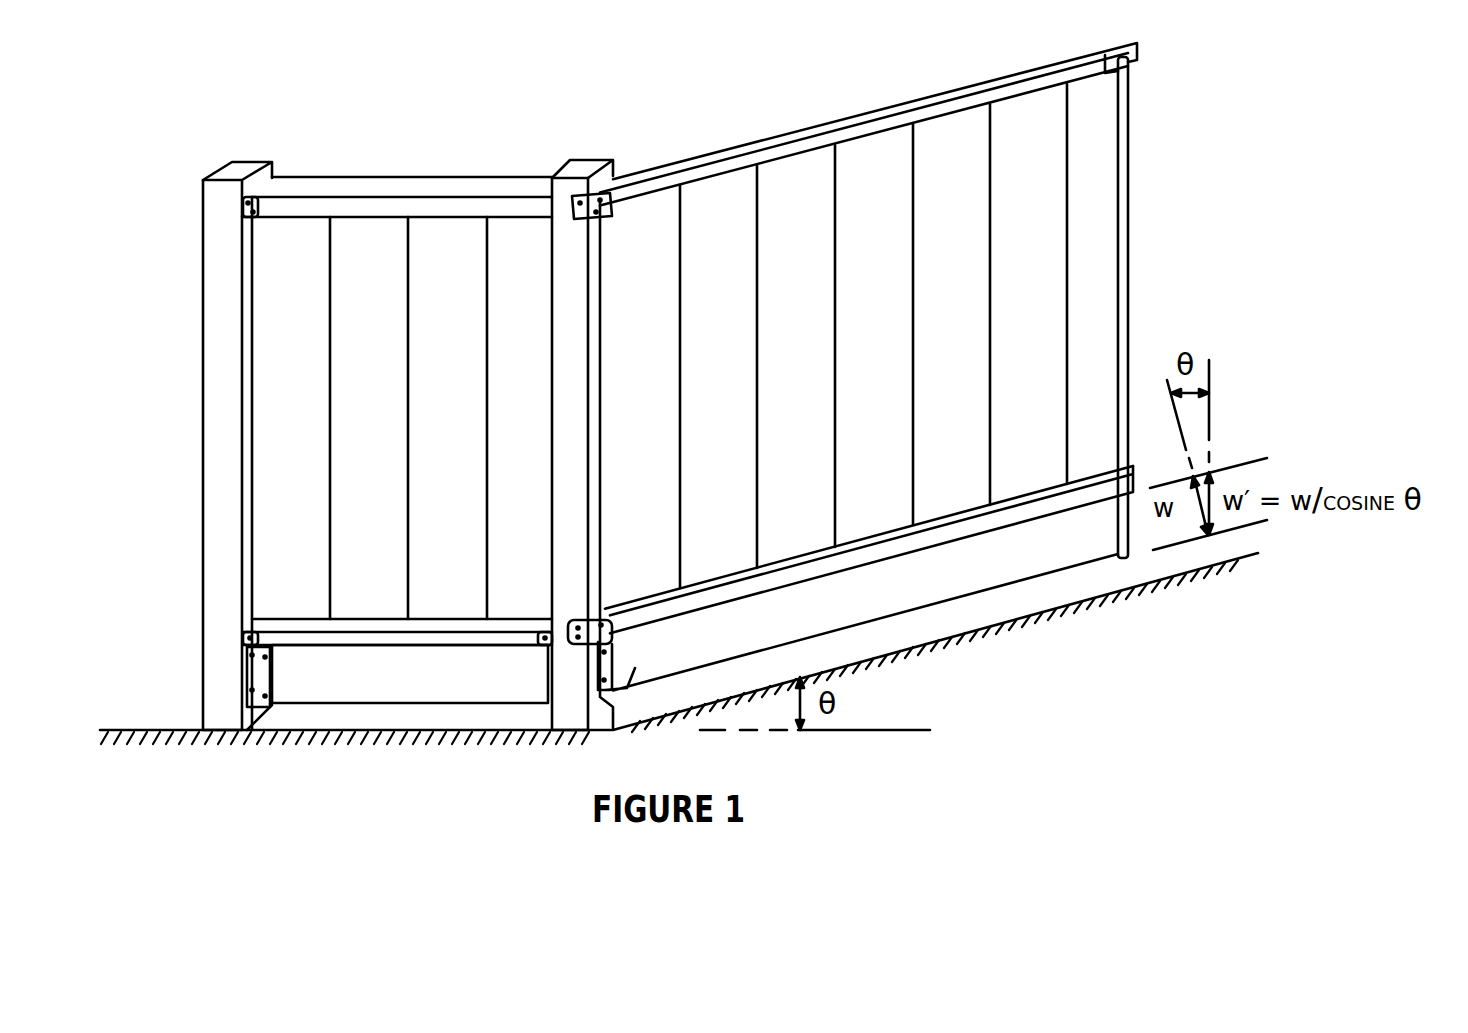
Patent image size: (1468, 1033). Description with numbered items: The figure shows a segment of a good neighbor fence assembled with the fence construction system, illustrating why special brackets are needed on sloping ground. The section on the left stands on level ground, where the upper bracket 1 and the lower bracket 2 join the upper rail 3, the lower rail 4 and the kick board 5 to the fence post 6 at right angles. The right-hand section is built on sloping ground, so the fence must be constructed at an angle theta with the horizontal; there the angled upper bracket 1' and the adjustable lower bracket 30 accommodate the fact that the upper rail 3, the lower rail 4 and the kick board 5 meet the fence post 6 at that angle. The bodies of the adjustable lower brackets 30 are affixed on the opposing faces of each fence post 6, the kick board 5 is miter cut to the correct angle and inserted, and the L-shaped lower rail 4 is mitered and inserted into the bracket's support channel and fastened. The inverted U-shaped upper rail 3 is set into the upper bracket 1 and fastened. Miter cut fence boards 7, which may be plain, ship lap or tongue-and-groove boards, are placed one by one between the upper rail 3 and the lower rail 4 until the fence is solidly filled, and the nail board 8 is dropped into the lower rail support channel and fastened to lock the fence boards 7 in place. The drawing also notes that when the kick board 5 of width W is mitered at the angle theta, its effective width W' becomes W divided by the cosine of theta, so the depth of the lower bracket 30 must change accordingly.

The upper bracket 1 is at (212, 202).
The upper bracket 1' is at (614, 226).
The lower bracket 2 is at (242, 640).
The upper rail 3 is at (380, 183).
The lower rail 4 is at (301, 650).
The kick board 5 is at (376, 686).
The fence post 6 is at (585, 166).
The fence boards 7 is at (1128, 219).
The nail board 8 is at (1012, 500).
The adjustable lower bracket 30 is at (614, 642).